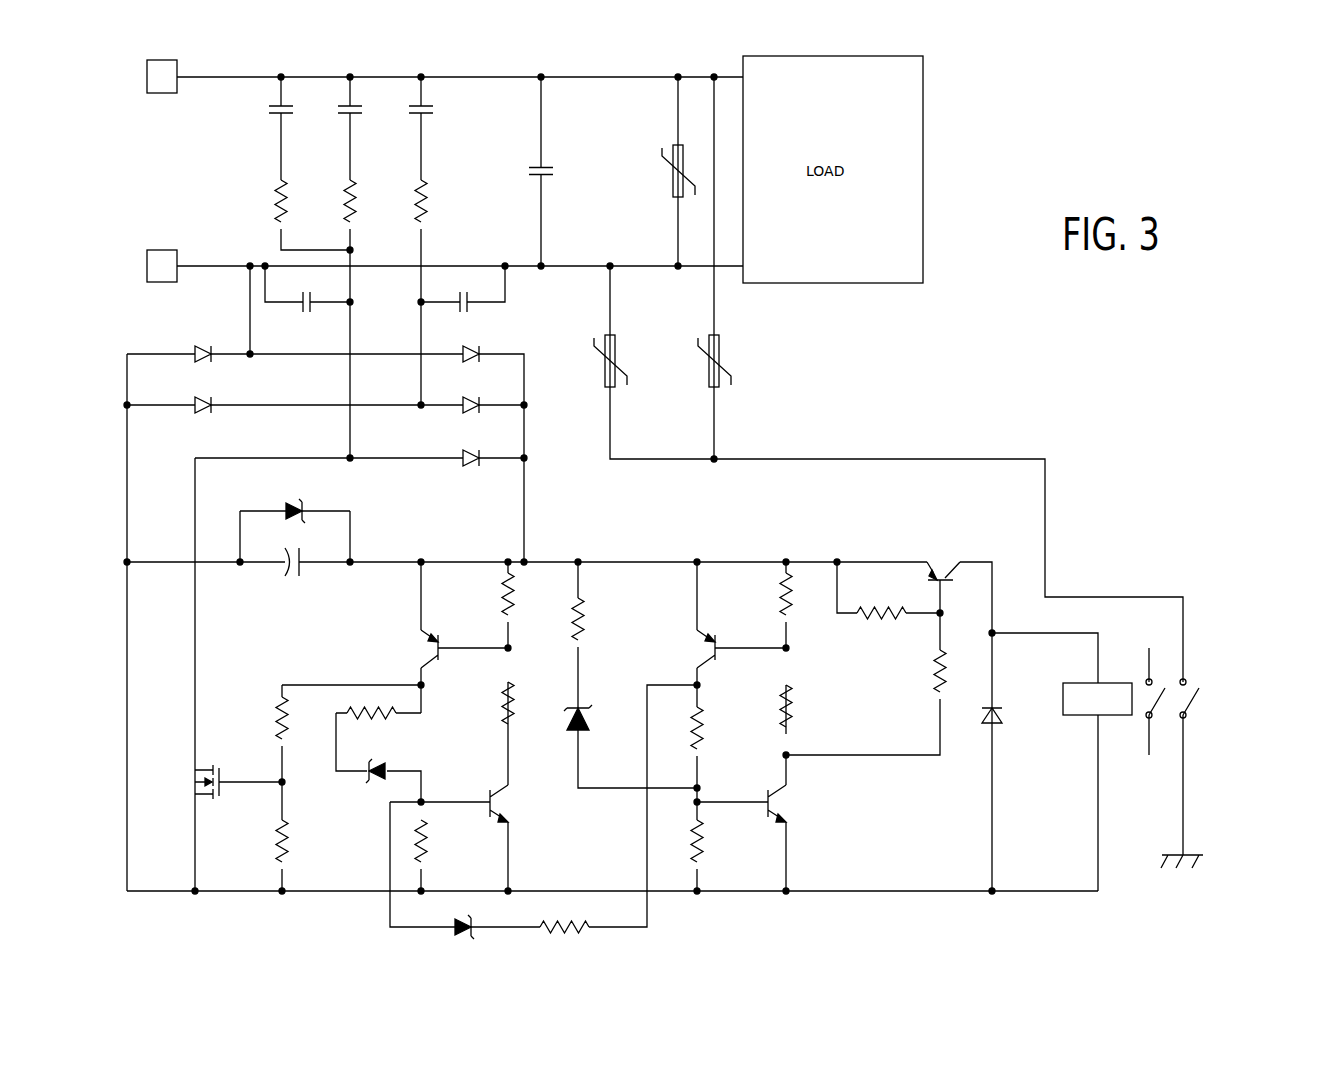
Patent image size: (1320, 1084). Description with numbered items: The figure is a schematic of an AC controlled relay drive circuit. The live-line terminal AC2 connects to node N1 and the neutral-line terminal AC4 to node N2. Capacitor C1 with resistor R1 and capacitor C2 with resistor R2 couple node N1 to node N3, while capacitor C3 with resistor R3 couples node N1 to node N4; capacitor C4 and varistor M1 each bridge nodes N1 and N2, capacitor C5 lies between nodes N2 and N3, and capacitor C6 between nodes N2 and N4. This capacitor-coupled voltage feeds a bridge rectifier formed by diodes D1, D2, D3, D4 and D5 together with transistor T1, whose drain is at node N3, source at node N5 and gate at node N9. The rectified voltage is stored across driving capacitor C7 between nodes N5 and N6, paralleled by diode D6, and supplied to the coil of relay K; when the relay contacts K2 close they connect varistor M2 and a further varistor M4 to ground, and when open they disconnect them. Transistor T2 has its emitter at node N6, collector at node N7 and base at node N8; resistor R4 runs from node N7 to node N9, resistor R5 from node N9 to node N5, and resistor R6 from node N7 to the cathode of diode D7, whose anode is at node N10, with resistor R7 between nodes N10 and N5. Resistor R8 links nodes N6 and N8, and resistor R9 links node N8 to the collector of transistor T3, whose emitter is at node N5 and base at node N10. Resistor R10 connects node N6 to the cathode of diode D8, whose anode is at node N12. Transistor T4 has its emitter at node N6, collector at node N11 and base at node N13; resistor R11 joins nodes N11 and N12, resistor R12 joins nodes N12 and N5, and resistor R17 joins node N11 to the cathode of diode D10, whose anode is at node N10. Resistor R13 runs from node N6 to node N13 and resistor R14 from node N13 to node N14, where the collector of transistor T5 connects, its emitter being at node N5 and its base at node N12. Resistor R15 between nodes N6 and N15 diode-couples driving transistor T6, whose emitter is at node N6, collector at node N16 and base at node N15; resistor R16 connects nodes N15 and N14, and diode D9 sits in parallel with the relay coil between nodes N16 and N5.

The AC line input terminal L1 AC2 is at (149, 77).
The AC neutral input terminal L2/N AC4 is at (150, 267).
The first capacitor C1 is at (327, 118).
The second capacitor C2 is at (257, 118).
The third capacitor C3 is at (398, 118).
The fourth capacitor C4 is at (559, 180).
The fifth capacitor C5 is at (308, 302).
The sixth capacitor C6 is at (463, 302).
The seventh capacitor C7 is at (291, 588).
The first resistor R1 is at (378, 201).
The second resistor R2 is at (309, 201).
The third resistor R3 is at (449, 201).
The fourth resistor R4 is at (299, 718).
The fifth resistor R5 is at (300, 841).
The sixth resistor R6 is at (374, 720).
The seventh resistor R7 is at (439, 840).
The eighth resistor R8 is at (487, 594).
The ninth resistor R9 is at (523, 703).
The tenth resistor R10 is at (592, 619).
The eleventh resistor R11 is at (712, 728).
The twelfth resistor R12 is at (716, 840).
The thirteenth resistor R13 is at (766, 594).
The fourteenth resistor R14 is at (800, 706).
The fifteenth resistor R15 is at (881, 633).
The sixteenth resistor R16 is at (955, 671).
The seventeenth resistor R17 is at (557, 935).
The first diode D1 is at (202, 365).
The second diode D2 is at (470, 365).
The third diode D3 is at (202, 416).
The fourth diode D4 is at (470, 416).
The fifth diode D5 is at (470, 470).
The sixth diode D6 is at (290, 500).
The seventh diode D7 is at (360, 788).
The eighth diode D8 is at (594, 722).
The ninth diode D9 is at (1006, 714).
The tenth diode D10 is at (456, 938).
The first transistor T1 is at (226, 799).
The second transistor T2 is at (414, 649).
The third transistor T3 is at (510, 803).
The fourth transistor T4 is at (691, 649).
The fifth transistor T5 is at (787, 803).
The sixth transistor T6 is at (943, 560).
The first varistor M1 is at (663, 171).
The second varistor M2 is at (619, 361).
The varistor M4 is at (724, 361).
The relay K is at (1097, 699).
The DPST relay contacts K2 is at (1215, 698).
The first node N1 is at (279, 64).
The second node N2 is at (253, 254).
The third node N3 is at (361, 250).
The fourth node N4 is at (407, 302).
The fifth node N5 is at (112, 405).
The sixth node N6 is at (536, 405).
The seventh node N7 is at (434, 685).
The eighth node N8 is at (520, 648).
The ninth node N9 is at (295, 773).
The tenth node N10 is at (437, 794).
The eleventh node N11 is at (712, 685).
The twelfth node N12 is at (713, 792).
The thirteenth node N13 is at (802, 648).
The fourteenth node N14 is at (767, 755).
The fifteenth node N15 is at (957, 612).
The sixteenth node N16 is at (1007, 620).